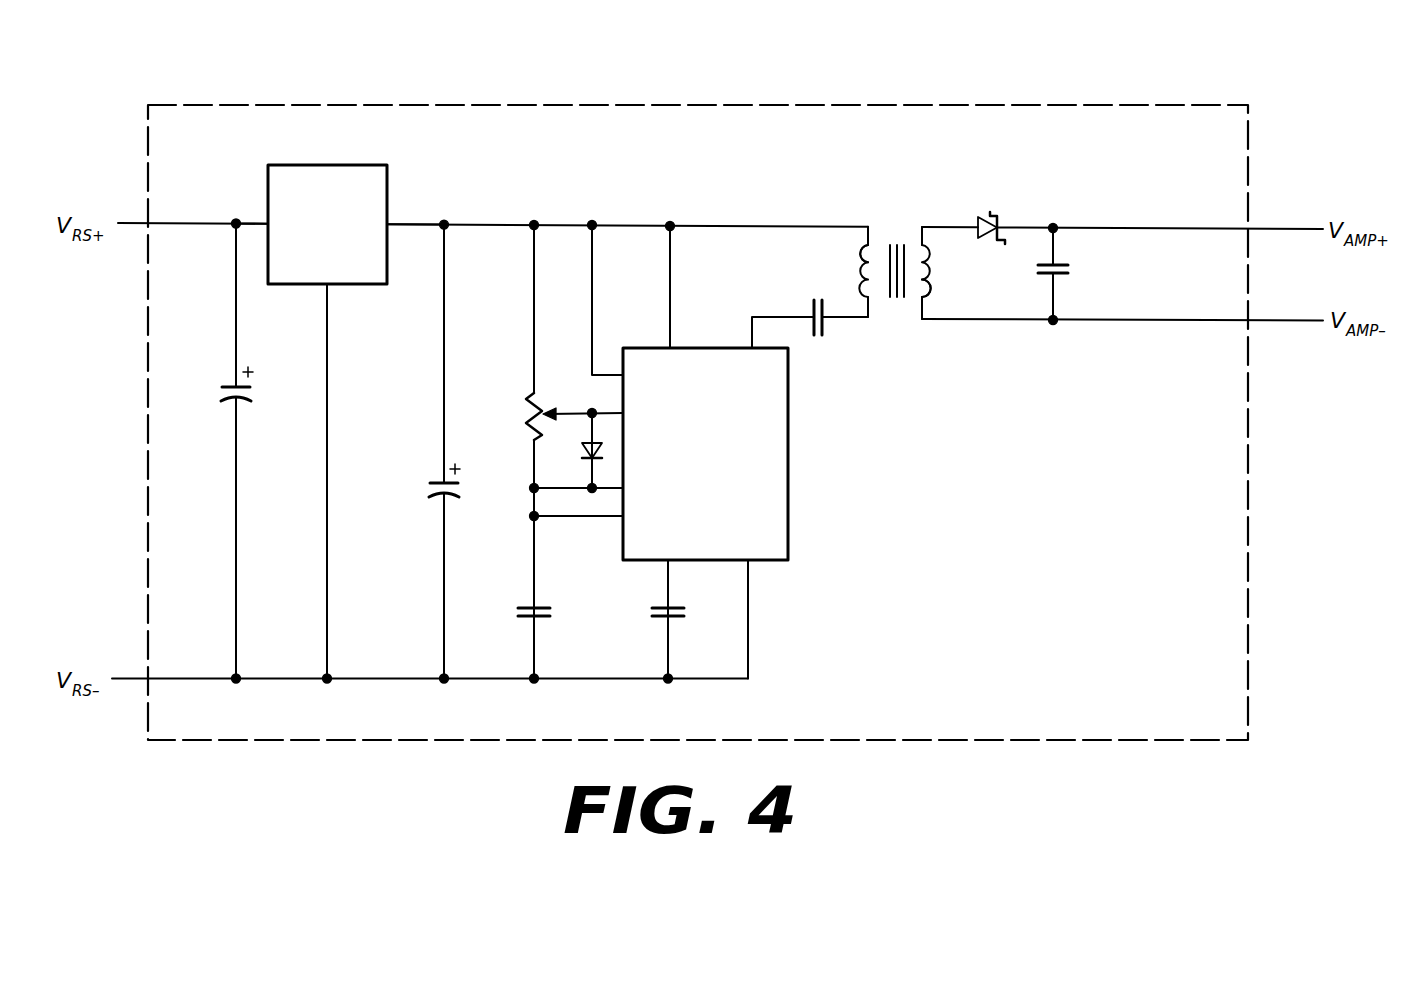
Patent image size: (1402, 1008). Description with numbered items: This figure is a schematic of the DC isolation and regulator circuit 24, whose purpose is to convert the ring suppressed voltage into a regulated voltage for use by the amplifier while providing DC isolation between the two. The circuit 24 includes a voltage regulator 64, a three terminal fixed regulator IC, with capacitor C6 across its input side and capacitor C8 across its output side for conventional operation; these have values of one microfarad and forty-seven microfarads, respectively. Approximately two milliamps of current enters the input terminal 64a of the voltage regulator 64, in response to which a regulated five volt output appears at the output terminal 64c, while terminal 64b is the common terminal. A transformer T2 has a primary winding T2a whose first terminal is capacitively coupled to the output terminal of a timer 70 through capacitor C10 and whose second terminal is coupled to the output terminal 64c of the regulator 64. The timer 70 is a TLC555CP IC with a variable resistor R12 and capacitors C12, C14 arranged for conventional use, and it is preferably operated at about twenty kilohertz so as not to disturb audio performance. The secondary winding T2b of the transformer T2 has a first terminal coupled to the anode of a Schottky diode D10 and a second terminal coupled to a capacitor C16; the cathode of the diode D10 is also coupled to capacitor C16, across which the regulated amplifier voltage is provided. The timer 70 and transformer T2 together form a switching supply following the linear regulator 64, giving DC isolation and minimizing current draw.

The DC isolation and regulator circuit 24 is at (1248, 688).
The voltage regulator 64 is at (330, 165).
The input terminal 64a is at (266, 220).
The common terminal 64b is at (330, 287).
The output terminal 64c is at (392, 220).
The timer 70 is at (788, 412).
The capacitor C6 is at (252, 392).
The capacitor C8 is at (459, 451).
The capacitor C10 is at (835, 306).
The capacitor C12 is at (553, 642).
The capacitor C14 is at (689, 621).
The capacitor C16 is at (1074, 274).
The Schottky diode D10 is at (980, 212).
The variable resistor R12 is at (527, 428).
The transformer T2 is at (906, 233).
The primary winding T2a is at (868, 302).
The secondary winding T2b is at (922, 302).